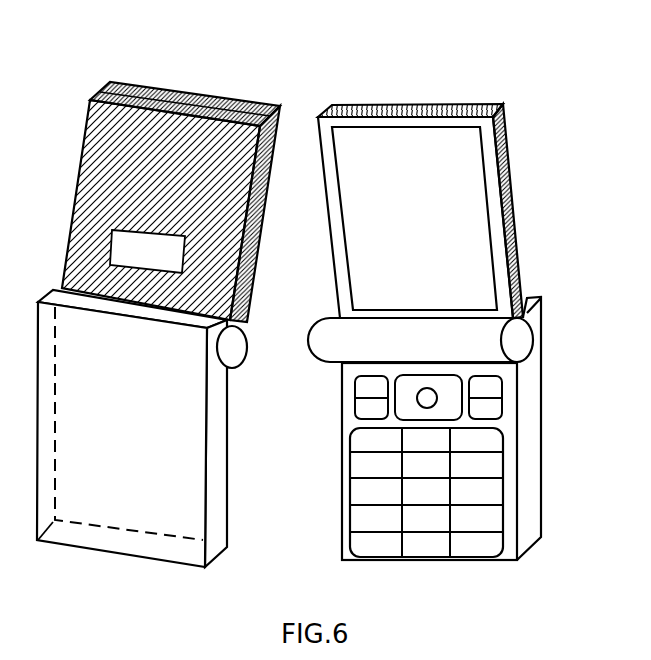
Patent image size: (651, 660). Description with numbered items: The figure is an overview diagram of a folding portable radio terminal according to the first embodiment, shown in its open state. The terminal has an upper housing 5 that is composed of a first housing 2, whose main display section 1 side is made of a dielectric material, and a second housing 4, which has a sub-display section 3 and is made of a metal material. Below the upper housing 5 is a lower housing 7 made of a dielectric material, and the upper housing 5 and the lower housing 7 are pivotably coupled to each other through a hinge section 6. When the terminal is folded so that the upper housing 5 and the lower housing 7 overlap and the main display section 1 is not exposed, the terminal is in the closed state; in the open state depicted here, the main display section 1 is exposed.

The main display section 1 is at (423, 197).
The first housing 2 is at (417, 183).
The sub-display section 3 is at (167, 260).
The second housing 4 is at (186, 185).
The upper housing 5 is at (186, 58).
The hinge section 6 is at (342, 338).
The lower housing 7 is at (143, 418).